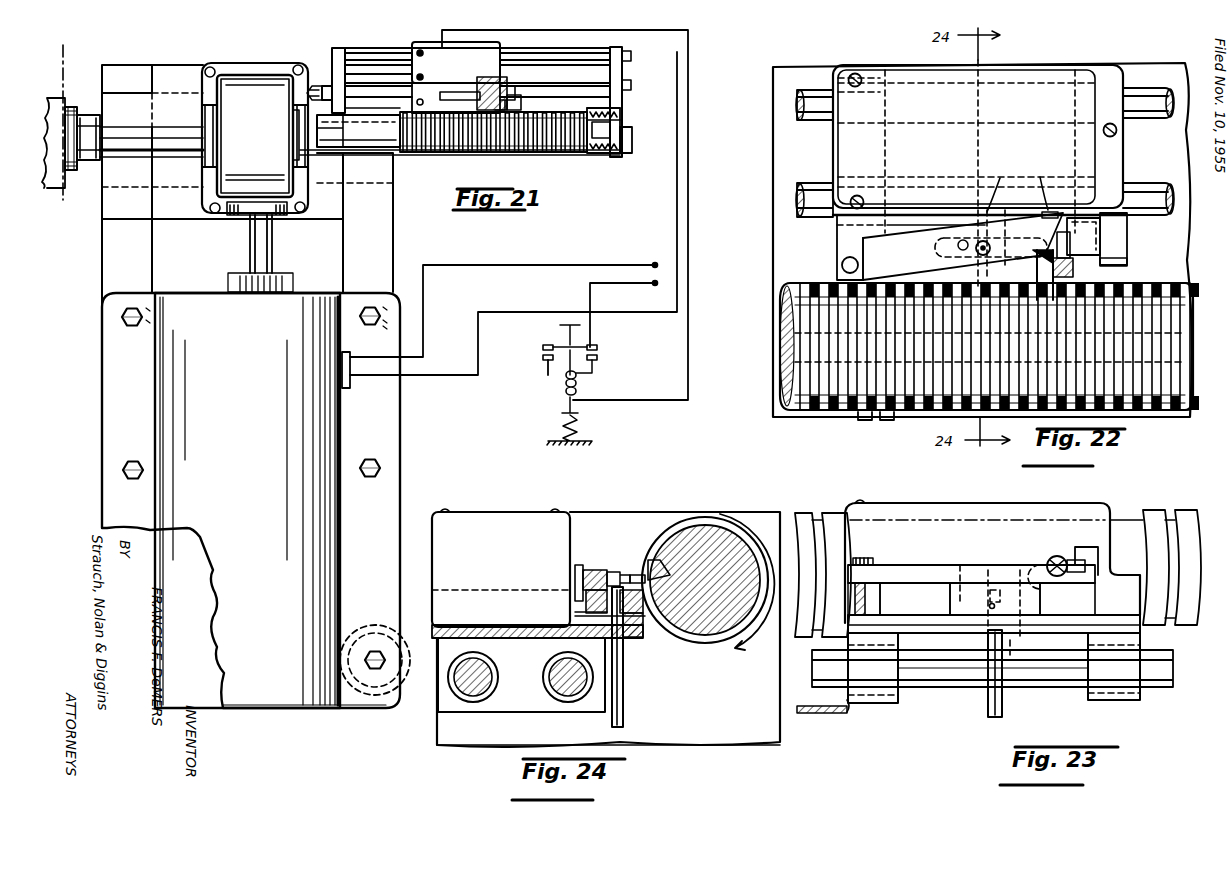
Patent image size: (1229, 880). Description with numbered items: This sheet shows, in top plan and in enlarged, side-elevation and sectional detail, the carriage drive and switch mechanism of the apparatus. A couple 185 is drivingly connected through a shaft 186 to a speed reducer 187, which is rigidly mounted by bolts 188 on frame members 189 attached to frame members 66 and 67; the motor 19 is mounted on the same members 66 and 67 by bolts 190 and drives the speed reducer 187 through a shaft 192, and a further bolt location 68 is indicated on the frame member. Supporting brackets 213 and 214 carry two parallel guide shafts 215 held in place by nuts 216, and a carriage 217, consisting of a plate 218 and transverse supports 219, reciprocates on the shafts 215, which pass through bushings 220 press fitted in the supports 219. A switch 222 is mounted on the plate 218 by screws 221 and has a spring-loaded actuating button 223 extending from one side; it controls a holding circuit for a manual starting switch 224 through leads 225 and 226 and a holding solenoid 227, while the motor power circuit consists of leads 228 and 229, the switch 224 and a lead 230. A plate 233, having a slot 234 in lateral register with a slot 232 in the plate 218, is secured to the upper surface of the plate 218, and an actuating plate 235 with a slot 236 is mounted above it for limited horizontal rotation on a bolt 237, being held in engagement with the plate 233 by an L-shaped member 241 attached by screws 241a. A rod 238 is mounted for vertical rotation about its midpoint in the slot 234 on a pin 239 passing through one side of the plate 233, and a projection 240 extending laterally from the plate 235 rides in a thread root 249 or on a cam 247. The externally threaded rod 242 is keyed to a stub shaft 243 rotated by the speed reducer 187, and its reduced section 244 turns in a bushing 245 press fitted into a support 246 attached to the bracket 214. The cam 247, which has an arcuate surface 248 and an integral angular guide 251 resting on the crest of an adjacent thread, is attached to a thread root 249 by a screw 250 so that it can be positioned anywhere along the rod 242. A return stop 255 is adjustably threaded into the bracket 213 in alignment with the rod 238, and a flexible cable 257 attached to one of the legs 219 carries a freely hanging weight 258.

In FIG. 21, the motor 19 is at (228, 333).
In FIG. 21, the frame member 66 is at (103, 243).
In FIG. 21, the frame member 67 is at (345, 240).
In FIG. 21, the bolt hole 68 is at (386, 632).
In FIG. 21, the couple 185 is at (70, 106).
In FIG. 21, the shaft 186 is at (134, 130).
In FIG. 21, the speed reducer 187 is at (268, 118).
In FIG. 21, the bolts 188 is at (222, 63).
In FIG. 21, the frame members 189 is at (181, 92).
In FIG. 21, the bolts 190 is at (367, 306).
In FIG. 21, the shaft 192 is at (271, 248).
In FIG. 21, the supporting bracket 213 is at (350, 72).
In FIG. 21, the supporting bracket 214 is at (633, 140).
In FIG. 21, the guide shafts 215 is at (597, 84).
In FIG. 22, the guide shafts 215 is at (815, 183).
In FIG. 24, the guide shafts 215 is at (475, 700).
In FIG. 23, the guide shafts 215 is at (1058, 688).
In FIG. 21, the nuts 216 is at (323, 52).
In FIG. 21, the carriage 217 is at (432, 46).
In FIG. 22, the carriage 217 is at (906, 52).
In FIG. 24, the carriage 217 is at (530, 722).
In FIG. 23, the carriage 217 is at (947, 699).
In FIG. 22, the plate 218 is at (1127, 246).
In FIG. 24, the plate 218 is at (475, 625).
In FIG. 23, the plate 218 is at (898, 618).
In FIG. 22, the transverse support 219 is at (890, 150).
In FIG. 24, the transverse support 219 is at (437, 718).
In FIG. 23, the transverse support 219 is at (886, 705).
In FIG. 24, the bushings 220 is at (546, 655).
In FIG. 22, the screws 221 is at (852, 74).
In FIG. 21, the switch 222 is at (460, 75).
In FIG. 22, the switch 222 is at (1035, 100).
In FIG. 24, the switch 222 is at (498, 514).
In FIG. 23, the switch 222 is at (933, 505).
In FIG. 21, the actuating button 223 is at (513, 76).
In FIG. 22, the actuating button 223 is at (1049, 190).
In FIG. 24, the actuating button 223 is at (575, 568).
In FIG. 23, the actuating button 223 is at (1038, 555).
In FIG. 21, the manual starting switch 224 is at (615, 350).
In FIG. 21, the lead 225 is at (688, 194).
In FIG. 21, the lead 226 is at (690, 128).
In FIG. 21, the holding solenoid 227 is at (584, 388).
In FIG. 21, the lead 228 is at (500, 265).
In FIG. 21, the lead 229 is at (637, 283).
In FIG. 21, the lead 230 is at (500, 376).
In FIG. 22, the slot 232 is at (999, 262).
In FIG. 23, the slot 232 is at (1058, 659).
In FIG. 22, the plate 233 is at (927, 268).
In FIG. 24, the plate 233 is at (583, 586).
In FIG. 23, the plate 233 is at (940, 601).
In FIG. 22, the slot 234 is at (943, 250).
In FIG. 23, the slot 234 is at (1018, 653).
In FIG. 21, the actuating plate 235 is at (468, 72).
In FIG. 22, the actuating plate 235 is at (840, 242).
In FIG. 24, the actuating plate 235 is at (583, 570).
In FIG. 23, the actuating plate 235 is at (920, 568).
In FIG. 22, the slot 236 is at (963, 240).
In FIG. 24, the slot 236 is at (607, 572).
In FIG. 23, the slot 236 is at (972, 565).
In FIG. 22, the bolt 237 is at (845, 258).
In FIG. 23, the bolt 237 is at (863, 558).
In FIG. 22, the rod 238 is at (993, 233).
In FIG. 24, the rod 238 is at (624, 713).
In FIG. 23, the rod 238 is at (988, 710).
In FIG. 22, the pin 239 is at (1003, 219).
In FIG. 24, the pin 239 is at (586, 606).
In FIG. 23, the pin 239 is at (995, 605).
In FIG. 22, the projection 240 is at (1127, 258).
In FIG. 23, the projection 240 is at (1060, 557).
In FIG. 22, the L-shaped member 241 is at (1120, 232).
In FIG. 23, the L-shaped member 241 is at (1097, 547).
In FIG. 23, the screws 241a is at (1095, 597).
In FIG. 21, the externally threaded rod 242 is at (402, 152).
In FIG. 22, the externally threaded rod 242 is at (780, 290).
In FIG. 24, the externally threaded rod 242 is at (725, 545).
In FIG. 23, the externally threaded rod 242 is at (808, 515).
In FIG. 21, the stub shaft 243 is at (356, 165).
In FIG. 21, the reduced section 244 is at (614, 121).
In FIG. 21, the bushing 245 is at (604, 150).
In FIG. 21, the support 246 is at (614, 108).
In FIG. 21, the cam 247 is at (542, 108).
In FIG. 22, the cam 247 is at (1068, 266).
In FIG. 24, the cam 247 is at (639, 545).
In FIG. 22, the arcuate surface 248 is at (1127, 266).
In FIG. 24, the arcuate surface 248 is at (643, 625).
In FIG. 22, the thread root 249 is at (895, 418).
In FIG. 24, the screw 250 is at (680, 580).
In FIG. 22, the angular guide 251 is at (1037, 266).
In FIG. 24, the angular guide 251 is at (650, 560).
In FIG. 21, the return stop 255 is at (389, 108).
In FIG. 23, the flexible cable 257 is at (815, 714).
In FIG. 21, the weight 258 is at (299, 103).